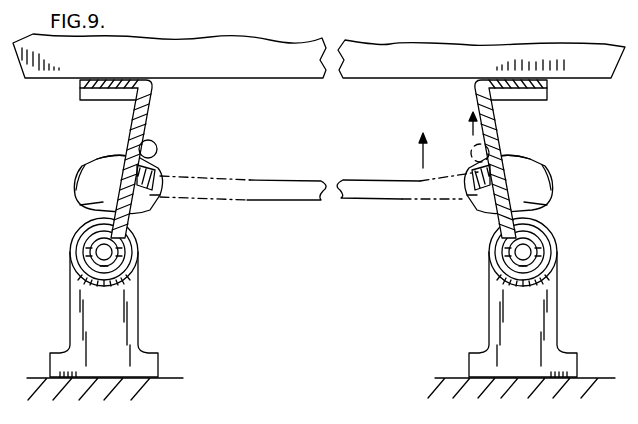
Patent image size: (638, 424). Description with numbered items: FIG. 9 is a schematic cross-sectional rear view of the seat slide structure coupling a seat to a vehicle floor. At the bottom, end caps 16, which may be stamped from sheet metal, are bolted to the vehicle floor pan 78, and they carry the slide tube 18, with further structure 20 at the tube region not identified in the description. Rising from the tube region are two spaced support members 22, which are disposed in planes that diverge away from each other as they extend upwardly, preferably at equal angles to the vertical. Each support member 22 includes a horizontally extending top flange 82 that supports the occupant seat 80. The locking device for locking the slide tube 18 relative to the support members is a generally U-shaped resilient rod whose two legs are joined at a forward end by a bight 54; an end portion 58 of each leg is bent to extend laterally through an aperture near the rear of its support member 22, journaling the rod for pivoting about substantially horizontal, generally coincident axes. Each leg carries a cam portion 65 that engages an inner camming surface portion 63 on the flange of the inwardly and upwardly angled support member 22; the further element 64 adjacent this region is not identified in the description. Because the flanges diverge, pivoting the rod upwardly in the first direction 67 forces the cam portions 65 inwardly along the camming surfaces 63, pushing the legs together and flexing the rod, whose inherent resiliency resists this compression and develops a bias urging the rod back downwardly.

The end cap 16 is at (113, 335).
The slide tube 18 is at (123, 250).
The bearing hub 20 is at (132, 268).
The support member 22 is at (150, 117).
The bight 54 is at (288, 190).
The end portion 58 is at (125, 163).
The camming surface portion 63 is at (156, 153).
The cam latch body 64 is at (82, 203).
The cam portion 65 is at (155, 172).
The first direction 67 is at (436, 146).
The vehicle floor pan 78 is at (154, 388).
The occupant seat 80 is at (406, 73).
The top flange 82 is at (97, 99).